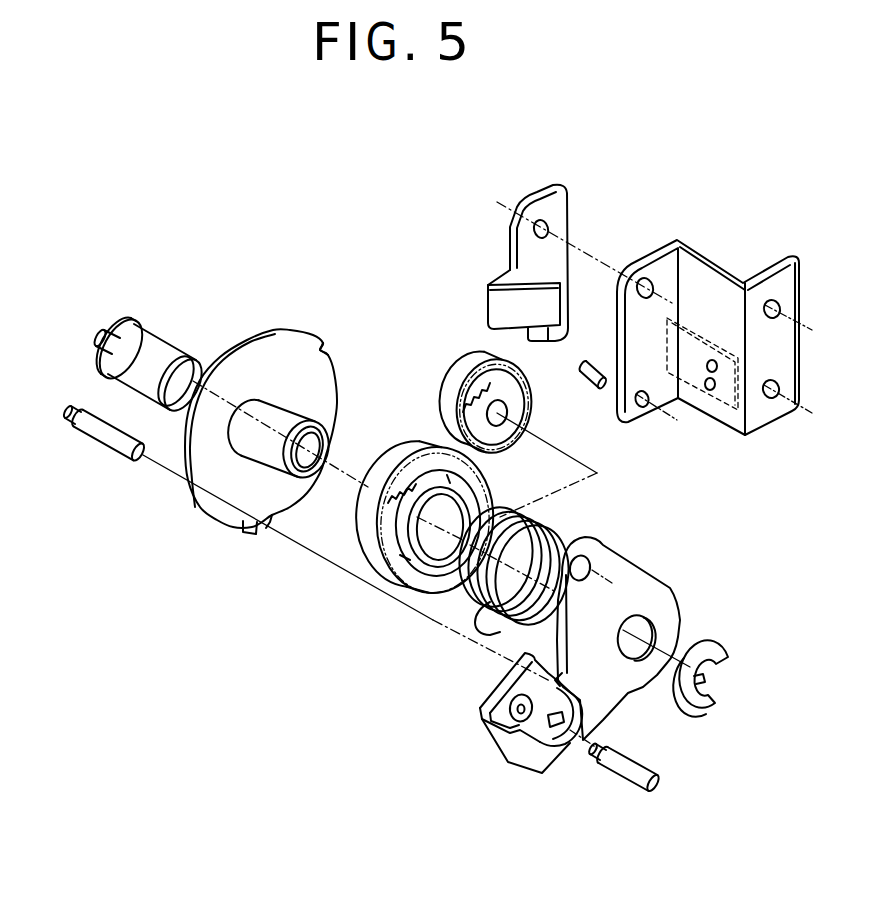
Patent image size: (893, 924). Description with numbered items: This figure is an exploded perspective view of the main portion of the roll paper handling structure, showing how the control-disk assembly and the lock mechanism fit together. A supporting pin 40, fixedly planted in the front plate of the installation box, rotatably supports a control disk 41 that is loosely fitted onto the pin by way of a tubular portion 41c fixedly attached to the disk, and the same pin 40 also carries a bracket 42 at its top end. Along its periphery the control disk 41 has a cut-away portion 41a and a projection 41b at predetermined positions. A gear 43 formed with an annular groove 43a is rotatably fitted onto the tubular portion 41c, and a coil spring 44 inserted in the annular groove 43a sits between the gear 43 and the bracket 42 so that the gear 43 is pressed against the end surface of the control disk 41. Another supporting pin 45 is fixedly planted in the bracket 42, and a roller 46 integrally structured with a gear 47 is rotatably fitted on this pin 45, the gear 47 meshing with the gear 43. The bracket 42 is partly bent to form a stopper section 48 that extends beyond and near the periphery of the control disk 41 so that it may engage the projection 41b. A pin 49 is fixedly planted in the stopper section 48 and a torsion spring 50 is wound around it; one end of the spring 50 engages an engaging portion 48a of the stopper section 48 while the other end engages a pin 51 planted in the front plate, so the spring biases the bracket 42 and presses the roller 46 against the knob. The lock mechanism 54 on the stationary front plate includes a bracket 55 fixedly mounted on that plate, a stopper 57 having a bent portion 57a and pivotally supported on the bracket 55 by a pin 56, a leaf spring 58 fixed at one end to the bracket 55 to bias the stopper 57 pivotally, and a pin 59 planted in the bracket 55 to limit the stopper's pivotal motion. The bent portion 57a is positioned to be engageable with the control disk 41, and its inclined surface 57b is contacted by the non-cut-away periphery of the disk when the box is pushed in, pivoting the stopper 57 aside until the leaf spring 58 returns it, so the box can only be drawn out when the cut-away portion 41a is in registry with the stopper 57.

The supporting pin 40 is at (161, 350).
The control disk 41 is at (293, 444).
The cut-away portion 41a is at (335, 389).
The projection 41b is at (258, 538).
The tubular portion 41c is at (291, 410).
The bracket 42 is at (664, 594).
The gear 43 is at (402, 532).
The annular groove 43a is at (405, 527).
The coil spring 44 is at (476, 617).
The supporting pin 45 is at (598, 472).
The roller 46 is at (499, 392).
The gear 47 is at (520, 410).
The stopper section 48 is at (540, 713).
The engaging portion 48a is at (565, 718).
The pin 49 is at (607, 777).
The torsion spring 50 is at (510, 716).
The pin 51 is at (109, 443).
The lock mechanism 54 is at (654, 309).
The bracket 55 is at (698, 268).
The pin 56 is at (590, 252).
The stopper 57 is at (525, 263).
The bent portion 57a is at (497, 303).
The inclined surface 57b is at (552, 315).
The leaf spring 58 is at (693, 386).
The pin 59 is at (589, 361).